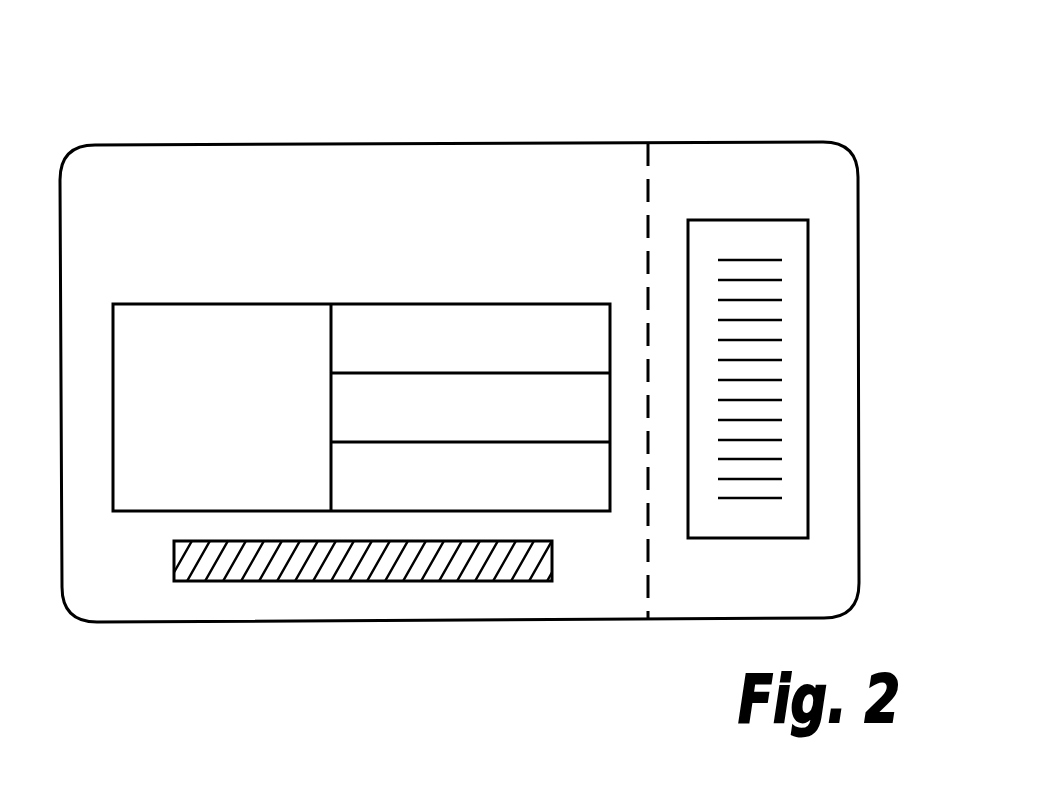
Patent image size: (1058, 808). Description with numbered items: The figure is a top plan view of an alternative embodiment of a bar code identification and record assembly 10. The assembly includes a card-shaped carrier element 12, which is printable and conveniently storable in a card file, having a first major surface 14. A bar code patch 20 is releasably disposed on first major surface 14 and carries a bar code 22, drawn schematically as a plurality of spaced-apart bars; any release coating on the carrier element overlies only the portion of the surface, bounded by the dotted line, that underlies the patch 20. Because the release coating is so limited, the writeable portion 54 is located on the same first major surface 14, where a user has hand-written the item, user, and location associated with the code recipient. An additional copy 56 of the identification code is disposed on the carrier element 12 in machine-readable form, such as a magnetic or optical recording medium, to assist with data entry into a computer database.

The bar code identification and record assembly 10 is at (389, 95).
The carrier element 12 is at (472, 141).
The first major surface 14 is at (203, 199).
The bar code patch 20 is at (728, 219).
The bar code 22 is at (755, 503).
The writeable portion 54 is at (585, 522).
The additional copy of the identification code 56 is at (275, 582).